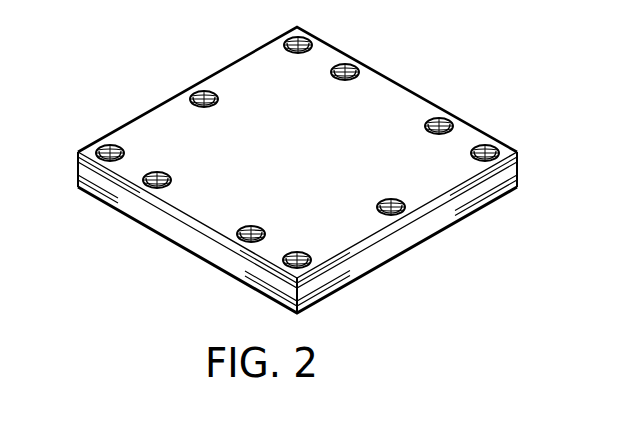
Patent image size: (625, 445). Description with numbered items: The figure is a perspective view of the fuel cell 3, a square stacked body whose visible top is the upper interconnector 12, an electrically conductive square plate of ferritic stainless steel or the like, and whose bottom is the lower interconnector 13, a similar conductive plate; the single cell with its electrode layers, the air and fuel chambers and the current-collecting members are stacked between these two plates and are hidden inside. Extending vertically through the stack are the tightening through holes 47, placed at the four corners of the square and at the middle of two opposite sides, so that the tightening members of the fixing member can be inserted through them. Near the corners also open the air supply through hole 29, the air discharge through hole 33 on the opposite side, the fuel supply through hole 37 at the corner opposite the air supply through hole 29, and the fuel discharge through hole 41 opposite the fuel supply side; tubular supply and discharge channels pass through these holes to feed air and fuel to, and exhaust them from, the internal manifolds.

The fuel cell 3 is at (297, 166).
The upper interconnector 12 is at (241, 72).
The lower interconnector 13 is at (152, 236).
The air supply through hole 29 is at (355, 63).
The air discharge through hole 33 is at (241, 243).
The fuel supply through hole 37 is at (447, 117).
The fuel discharge through hole 41 is at (150, 188).
The tightening through holes 47 is at (289, 38).